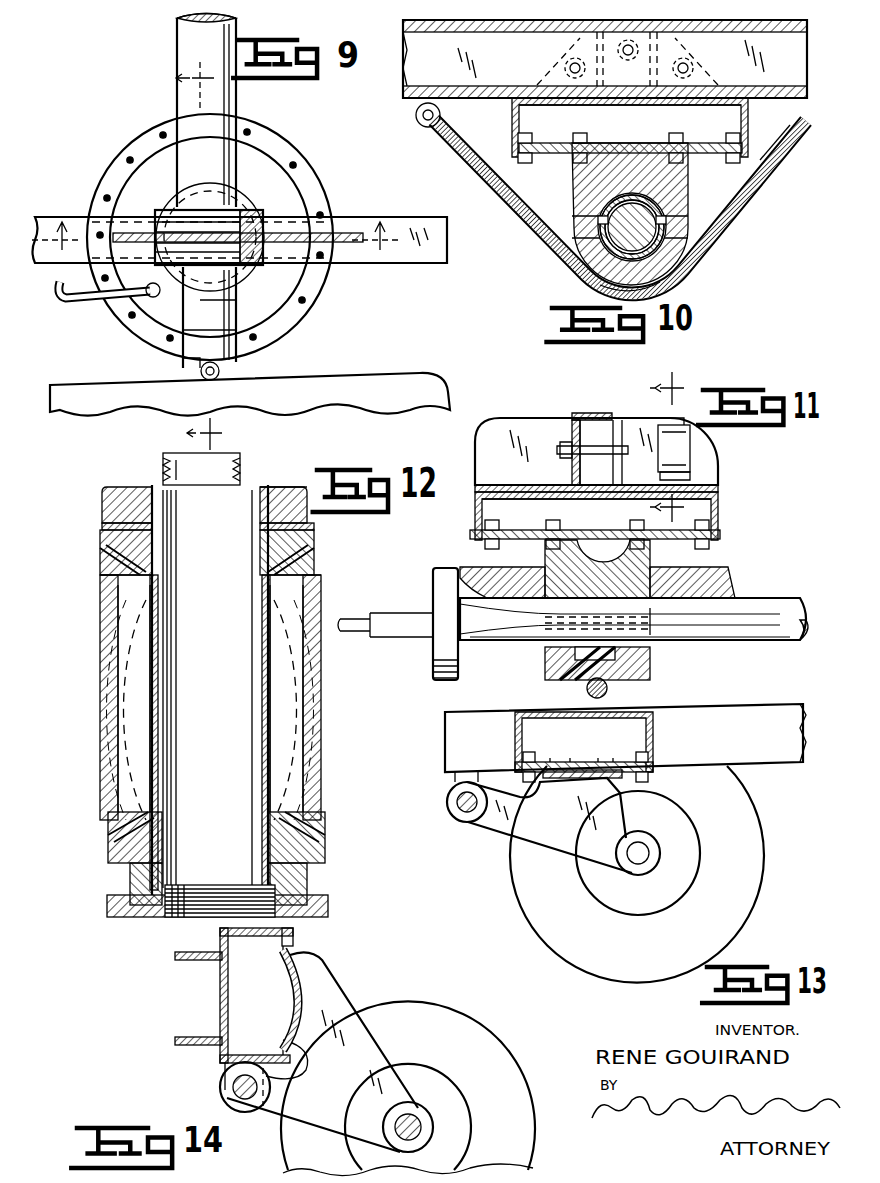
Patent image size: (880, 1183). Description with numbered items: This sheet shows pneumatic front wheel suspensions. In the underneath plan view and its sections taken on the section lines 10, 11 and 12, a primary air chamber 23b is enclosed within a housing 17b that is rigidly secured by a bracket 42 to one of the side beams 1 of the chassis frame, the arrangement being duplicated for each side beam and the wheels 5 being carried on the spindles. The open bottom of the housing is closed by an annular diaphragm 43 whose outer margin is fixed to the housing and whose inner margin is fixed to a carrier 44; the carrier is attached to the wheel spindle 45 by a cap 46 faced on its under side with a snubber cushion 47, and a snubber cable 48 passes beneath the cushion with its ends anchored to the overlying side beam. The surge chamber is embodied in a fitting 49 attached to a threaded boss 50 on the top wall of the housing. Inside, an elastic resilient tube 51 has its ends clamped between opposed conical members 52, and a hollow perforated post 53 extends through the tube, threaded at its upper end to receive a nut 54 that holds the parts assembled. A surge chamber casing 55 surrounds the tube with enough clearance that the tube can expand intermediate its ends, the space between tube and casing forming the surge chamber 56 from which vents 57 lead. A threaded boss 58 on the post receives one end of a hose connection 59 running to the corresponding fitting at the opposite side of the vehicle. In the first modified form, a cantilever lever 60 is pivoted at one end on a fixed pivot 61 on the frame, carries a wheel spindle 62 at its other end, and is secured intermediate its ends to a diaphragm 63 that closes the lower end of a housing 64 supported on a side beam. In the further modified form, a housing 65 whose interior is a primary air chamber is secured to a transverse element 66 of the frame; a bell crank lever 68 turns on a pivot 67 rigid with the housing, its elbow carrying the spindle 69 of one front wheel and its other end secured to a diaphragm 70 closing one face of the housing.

In FIG. 9, the side beams of the chassis frame 1 is at (420, 258).
In FIG. 10, the side beams of the chassis frame 1 is at (605, 59).
In FIG. 11, the side beams of the chassis frame 1 is at (580, 412).
In FIG. 13, the side beams of the chassis frame 1 is at (448, 736).
In FIG. 9, the wheels 5 is at (388, 384).
In FIG. 9, the section line 10— 10 is at (215, 220).
In FIG. 9, the section line 11— 11 is at (181, 86).
In FIG. 12, the section line 11— 11 is at (187, 434).
In FIG. 11, the section line 12— 12 is at (657, 447).
In FIG. 10, the housing 17b is at (512, 132).
In FIG. 11, the housing 17b is at (720, 508).
In FIG. 12, the housing 17b is at (330, 904).
In FIG. 10, the primary air chamber 23b is at (630, 117).
In FIG. 11, the primary air chamber 23b is at (596, 507).
In FIG. 10, the bracket 42 is at (660, 44).
In FIG. 9, the annular diaphragm 43 is at (210, 237).
In FIG. 10, the annular diaphragm 43 is at (740, 140).
In FIG. 11, the annular diaphragm 43 is at (472, 534).
In FIG. 10, the carrier 44 is at (688, 178).
In FIG. 11, the carrier 44 is at (545, 660).
In FIG. 9, the wheel spindle 45 is at (225, 108).
In FIG. 10, the wheel spindle 45 is at (590, 262).
In FIG. 11, the wheel spindle 45 is at (772, 600).
In FIG. 9, the cap 46 is at (240, 318).
In FIG. 10, the cap 46 is at (722, 226).
In FIG. 9, the snubber cushion 47 is at (265, 215).
In FIG. 10, the snubber cushion 47 is at (692, 272).
In FIG. 11, the snubber cushion 47 is at (652, 668).
In FIG. 9, the snubber cable 48 is at (358, 245).
In FIG. 10, the snubber cable 48 is at (540, 228).
In FIG. 11, the snubber cable 48 is at (608, 694).
In FIG. 9, the fitting 49 is at (150, 308).
In FIG. 11, the fitting 49 is at (690, 478).
In FIG. 12, the fitting 49 is at (105, 500).
In FIG. 12, the threaded boss 50 is at (160, 922).
In FIG. 12, the elastic resilient tube 51 is at (125, 712).
In FIG. 12, the conical members 52 is at (328, 826).
In FIG. 12, the hollow perforated post 53 is at (262, 738).
In FIG. 12, the nut 54 is at (288, 487).
In FIG. 11, the surge chamber casing 55 is at (692, 450).
In FIG. 12, the surge chamber casing 55 is at (100, 656).
In FIG. 12, the surge chamber 56 is at (125, 603).
In FIG. 12, the vents 57 is at (100, 548).
In FIG. 12, the threaded boss 58 is at (240, 460).
In FIG. 9, the hose connection 59 is at (82, 306).
In FIG. 13, the cantilever lever 60 is at (540, 832).
In FIG. 13, the fixed pivot 61 is at (463, 822).
In FIG. 13, the wheel spindle 62 is at (660, 858).
In FIG. 13, the diaphragm 63 is at (640, 776).
In FIG. 13, the housing 64 is at (654, 742).
In FIG. 14, the housing 65 is at (222, 942).
In FIG. 14, the transverse element 66 is at (185, 1048).
In FIG. 14, the pivot 67 is at (222, 1090).
In FIG. 14, the bell crank lever 68 is at (372, 1060).
In FIG. 14, the spindle 69 is at (430, 1118).
In FIG. 14, the diaphragm 70 is at (292, 990).